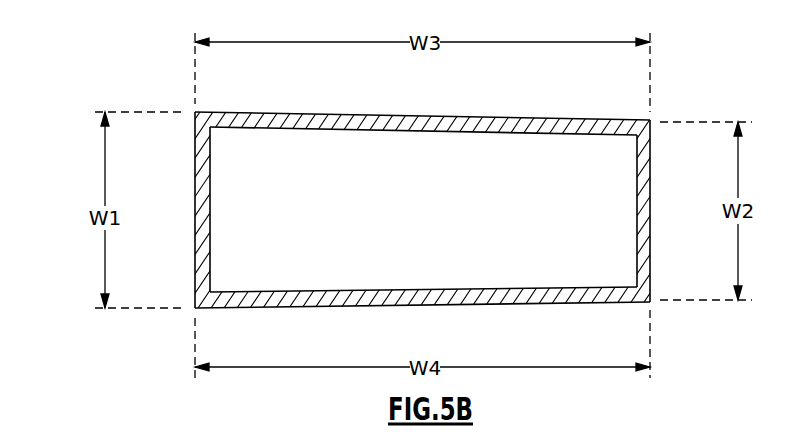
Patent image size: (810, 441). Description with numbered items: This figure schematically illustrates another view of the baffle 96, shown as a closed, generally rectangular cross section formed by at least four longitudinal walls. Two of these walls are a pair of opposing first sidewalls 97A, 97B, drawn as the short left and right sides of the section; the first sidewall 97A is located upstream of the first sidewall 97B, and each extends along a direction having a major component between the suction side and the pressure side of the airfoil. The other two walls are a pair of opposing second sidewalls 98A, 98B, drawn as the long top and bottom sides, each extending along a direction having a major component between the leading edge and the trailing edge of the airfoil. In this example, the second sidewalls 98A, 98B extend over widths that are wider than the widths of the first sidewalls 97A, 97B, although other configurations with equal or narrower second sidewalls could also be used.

The baffle 96 is at (270, 93).
The first sidewall 97A is at (203, 218).
The first sidewall 97B is at (643, 216).
The second sidewall 98A is at (438, 122).
The second sidewall 98B is at (443, 298).